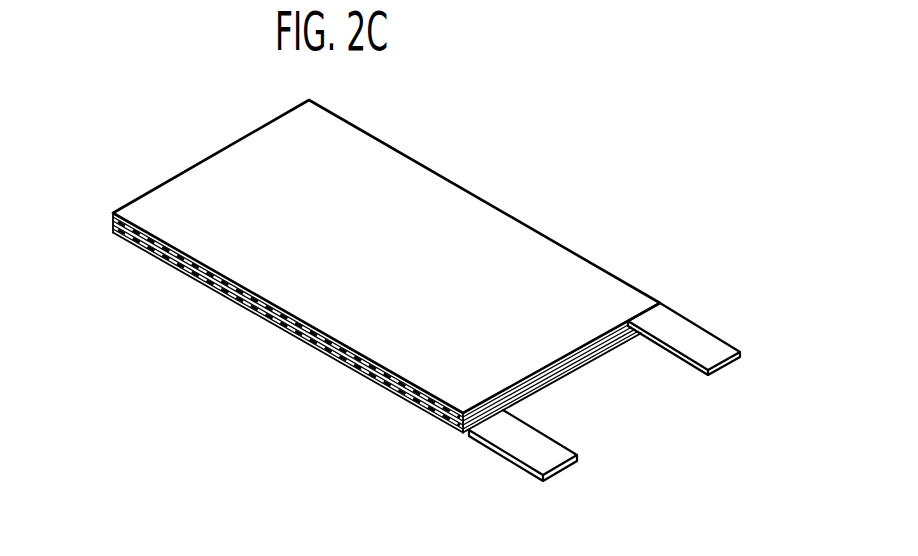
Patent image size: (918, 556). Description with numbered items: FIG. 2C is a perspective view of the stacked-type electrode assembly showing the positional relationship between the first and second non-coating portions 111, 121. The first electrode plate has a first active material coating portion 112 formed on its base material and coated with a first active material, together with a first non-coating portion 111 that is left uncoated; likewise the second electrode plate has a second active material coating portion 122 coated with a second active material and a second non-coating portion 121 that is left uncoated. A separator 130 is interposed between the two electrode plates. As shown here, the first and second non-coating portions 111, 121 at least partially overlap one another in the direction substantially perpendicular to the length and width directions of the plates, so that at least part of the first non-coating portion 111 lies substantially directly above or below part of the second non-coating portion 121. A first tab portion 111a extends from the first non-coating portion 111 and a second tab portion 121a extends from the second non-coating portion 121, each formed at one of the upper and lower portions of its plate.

The first non-coating portion 111 is at (113, 221).
The first active material coating portion 112 is at (260, 310).
The second non-coating portion 121 is at (126, 240).
The second active material coating portion 122 is at (357, 369).
The first tab portion 111a is at (701, 337).
The second tab portion 121a is at (547, 459).
The separator 130 is at (662, 301).